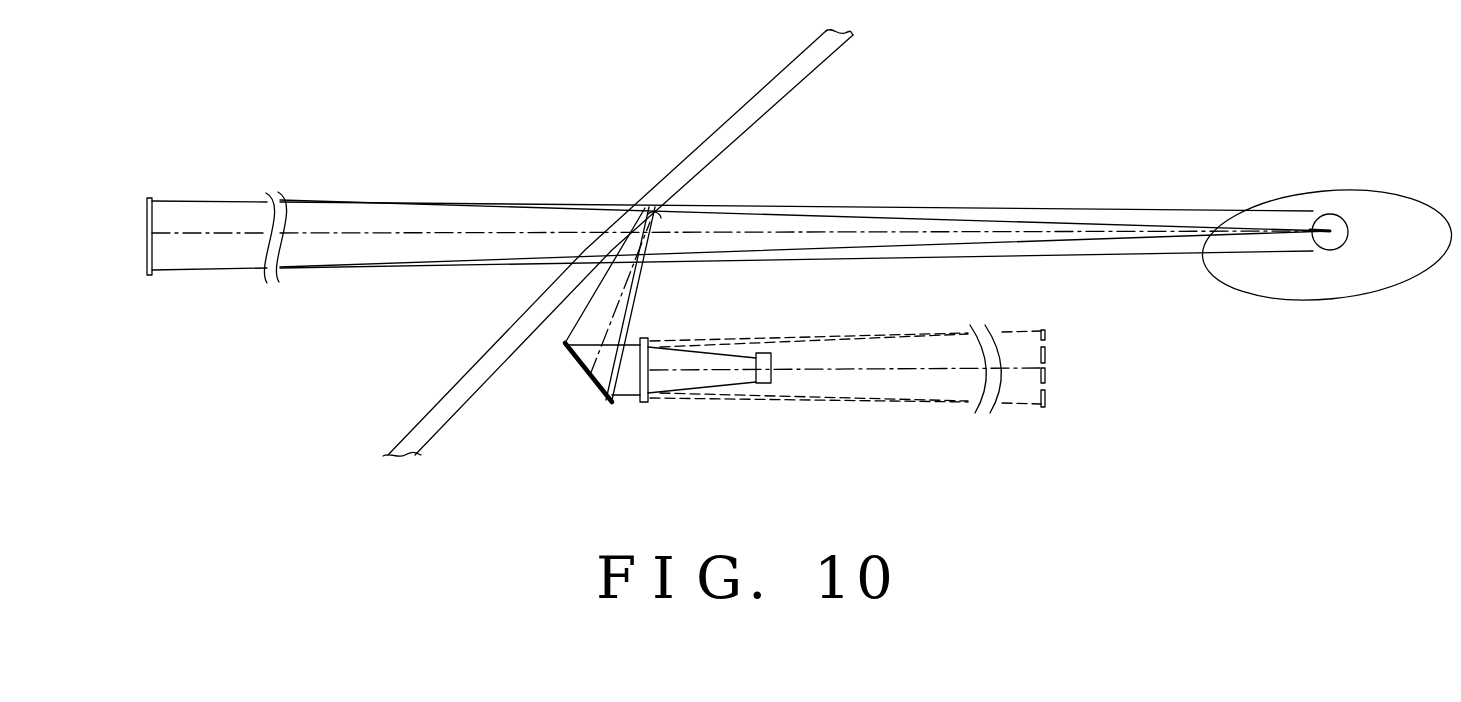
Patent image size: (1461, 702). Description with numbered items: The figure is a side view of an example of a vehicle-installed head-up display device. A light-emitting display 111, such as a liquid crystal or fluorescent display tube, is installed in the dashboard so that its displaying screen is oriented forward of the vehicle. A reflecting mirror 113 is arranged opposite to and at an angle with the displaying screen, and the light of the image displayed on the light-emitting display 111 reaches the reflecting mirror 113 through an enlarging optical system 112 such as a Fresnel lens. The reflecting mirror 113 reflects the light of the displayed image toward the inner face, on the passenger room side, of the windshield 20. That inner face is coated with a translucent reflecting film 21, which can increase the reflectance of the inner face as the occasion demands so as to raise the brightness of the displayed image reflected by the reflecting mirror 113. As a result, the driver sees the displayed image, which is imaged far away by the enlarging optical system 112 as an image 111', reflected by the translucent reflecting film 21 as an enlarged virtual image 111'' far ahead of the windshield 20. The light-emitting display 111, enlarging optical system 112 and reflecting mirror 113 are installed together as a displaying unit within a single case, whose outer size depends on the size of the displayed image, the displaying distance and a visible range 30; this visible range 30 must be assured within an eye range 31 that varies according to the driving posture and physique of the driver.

The windshield 20 is at (762, 87).
The translucent reflecting film 21 is at (652, 222).
The visible range 30 is at (1331, 214).
The eye range 31 is at (1378, 189).
The light-emitting display 111 is at (844, 416).
The enlarging optical system 112 is at (646, 338).
The reflecting mirror 113 is at (576, 364).
The image 111' is at (906, 378).
The enlarged virtual image 111'' is at (738, 273).